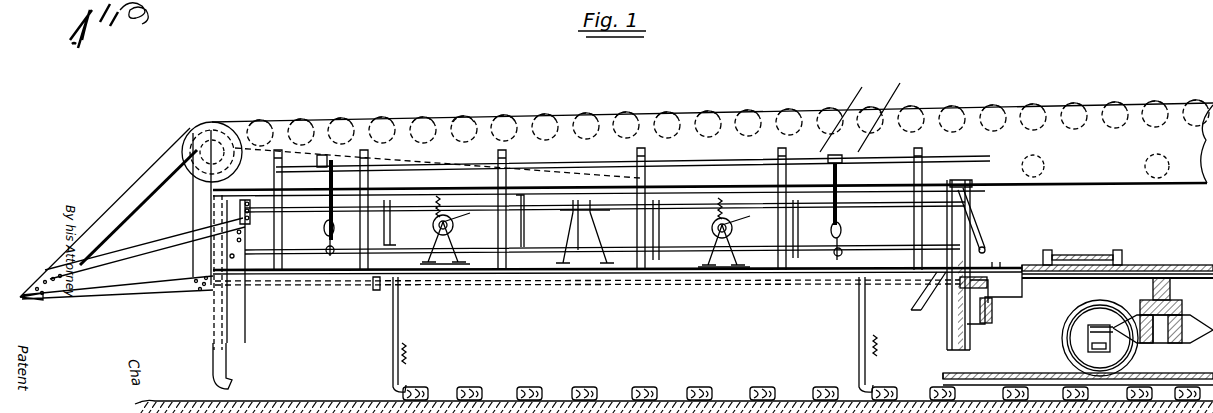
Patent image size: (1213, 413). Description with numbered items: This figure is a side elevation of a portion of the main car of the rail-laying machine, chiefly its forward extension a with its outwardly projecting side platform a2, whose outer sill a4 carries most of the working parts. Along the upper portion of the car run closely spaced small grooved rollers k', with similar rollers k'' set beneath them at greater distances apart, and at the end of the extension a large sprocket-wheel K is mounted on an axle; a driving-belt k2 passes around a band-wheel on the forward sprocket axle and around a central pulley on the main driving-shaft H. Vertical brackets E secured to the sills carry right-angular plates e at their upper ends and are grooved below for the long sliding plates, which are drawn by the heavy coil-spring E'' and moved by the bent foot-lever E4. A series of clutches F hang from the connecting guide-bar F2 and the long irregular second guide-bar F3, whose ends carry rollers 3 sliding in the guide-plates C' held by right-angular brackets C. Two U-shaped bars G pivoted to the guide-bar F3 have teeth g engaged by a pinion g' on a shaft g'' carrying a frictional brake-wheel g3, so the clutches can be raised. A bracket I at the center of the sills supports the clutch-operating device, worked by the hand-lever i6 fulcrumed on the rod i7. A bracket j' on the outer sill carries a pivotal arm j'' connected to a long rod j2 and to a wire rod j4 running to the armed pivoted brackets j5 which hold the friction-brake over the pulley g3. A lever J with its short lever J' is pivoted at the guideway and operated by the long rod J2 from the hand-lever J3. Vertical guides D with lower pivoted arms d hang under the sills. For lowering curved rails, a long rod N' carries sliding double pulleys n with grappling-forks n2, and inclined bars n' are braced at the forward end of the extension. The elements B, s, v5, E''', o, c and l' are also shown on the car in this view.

The forward extension a is at (712, 143).
The platform a2 is at (1145, 266).
The outer sill a4 is at (690, 280).
The grooved wheels or rollers k' is at (728, 119).
The roller or sprocket-wheel K is at (209, 125).
The driving-belt k2 is at (275, 135).
The grooved wheels or rollers k'' is at (1047, 164).
The brackets E is at (710, 203).
The bracket I is at (600, 185).
The lever J is at (592, 244).
The short lever J' is at (215, 240).
The long rod J2 is at (280, 180).
The hand-lever J3 is at (945, 258).
The inclined bars n' is at (108, 212).
The double pulleys n is at (602, 174).
The long rod N' is at (652, 122).
The front frame B is at (218, 200).
The bolt s is at (230, 258).
The guide plates or ways C' is at (242, 339).
The right-angular brackets C is at (930, 265).
The roller 3 is at (950, 248).
The cogs or teeth g is at (593, 206).
The cog wheel or pinion g' is at (577, 240).
The shaft g'' is at (610, 224).
The frictional brake-wheel g3 is at (579, 263).
The clutches F is at (826, 222).
The connecting guide-bar F2 is at (390, 305).
The second guide-bar F3 is at (378, 300).
The main driving-shaft H is at (592, 262).
The long rod j2 is at (600, 262).
The bracket j' is at (572, 261).
The long wire rod j4 is at (562, 148).
The pivotal arm j'' is at (557, 228).
The armed pivoted brackets j5 is at (468, 210).
The U-shaped bars G is at (445, 205).
The shaft v5 is at (616, 170).
The right-angular plates e is at (612, 190).
The guides D is at (399, 322).
The pivoted arm d is at (858, 367).
The grappling-forks n2 is at (840, 282).
The rod i7 is at (978, 210).
The hand-lever i6 is at (985, 246).
The coil-spring E'' is at (1006, 256).
The coupling plate E''' is at (961, 290).
The bent foot-lever E4 is at (993, 312).
The draw bar o is at (1024, 290).
The coupling link c is at (1000, 296).
The car rail l' is at (1082, 250).